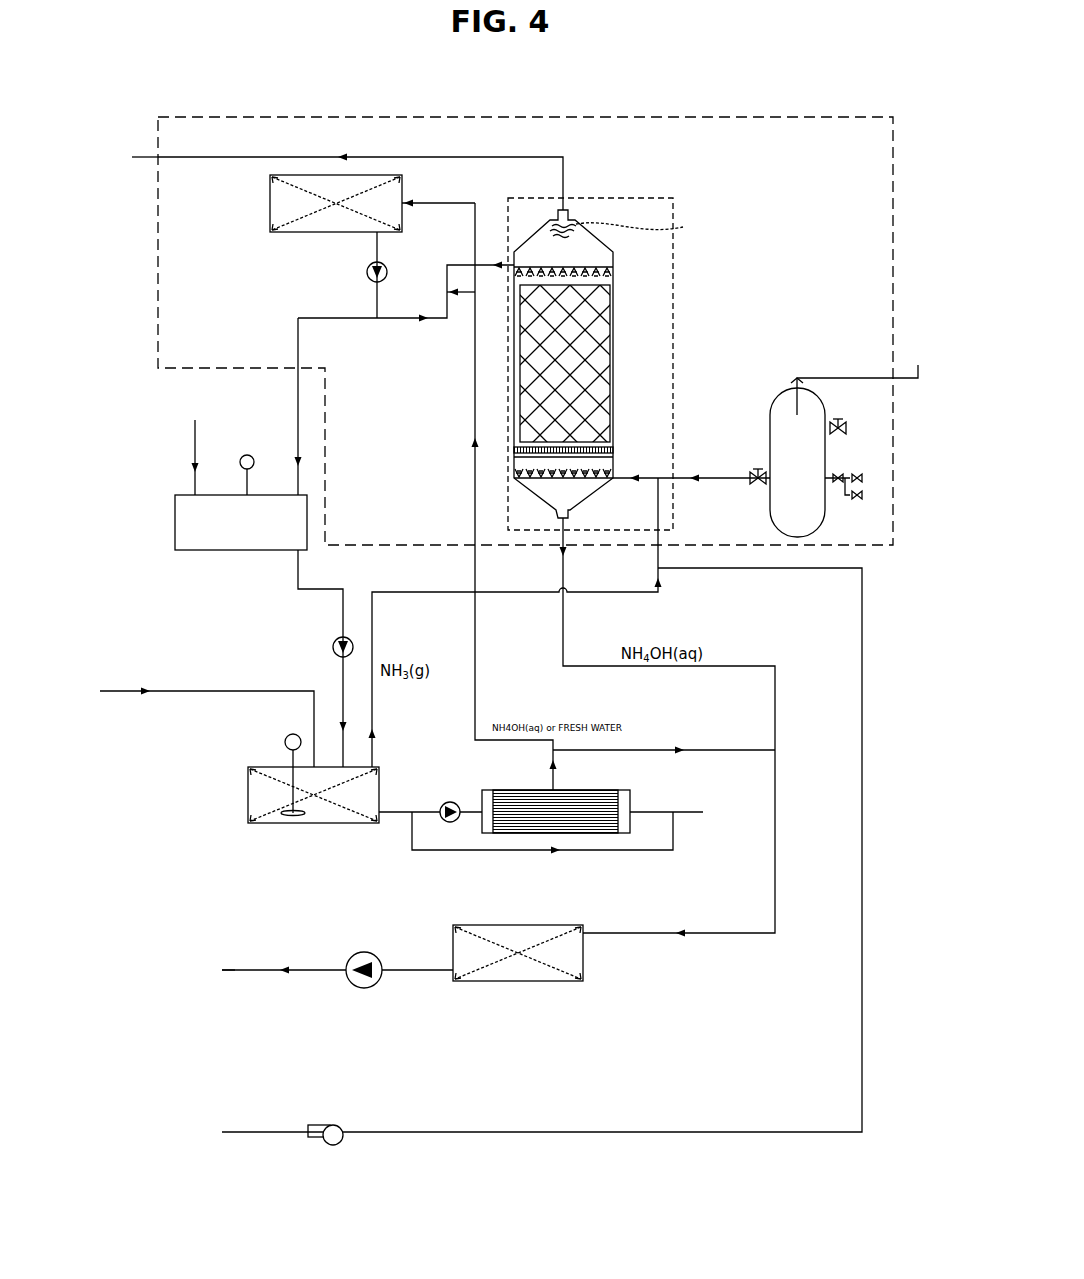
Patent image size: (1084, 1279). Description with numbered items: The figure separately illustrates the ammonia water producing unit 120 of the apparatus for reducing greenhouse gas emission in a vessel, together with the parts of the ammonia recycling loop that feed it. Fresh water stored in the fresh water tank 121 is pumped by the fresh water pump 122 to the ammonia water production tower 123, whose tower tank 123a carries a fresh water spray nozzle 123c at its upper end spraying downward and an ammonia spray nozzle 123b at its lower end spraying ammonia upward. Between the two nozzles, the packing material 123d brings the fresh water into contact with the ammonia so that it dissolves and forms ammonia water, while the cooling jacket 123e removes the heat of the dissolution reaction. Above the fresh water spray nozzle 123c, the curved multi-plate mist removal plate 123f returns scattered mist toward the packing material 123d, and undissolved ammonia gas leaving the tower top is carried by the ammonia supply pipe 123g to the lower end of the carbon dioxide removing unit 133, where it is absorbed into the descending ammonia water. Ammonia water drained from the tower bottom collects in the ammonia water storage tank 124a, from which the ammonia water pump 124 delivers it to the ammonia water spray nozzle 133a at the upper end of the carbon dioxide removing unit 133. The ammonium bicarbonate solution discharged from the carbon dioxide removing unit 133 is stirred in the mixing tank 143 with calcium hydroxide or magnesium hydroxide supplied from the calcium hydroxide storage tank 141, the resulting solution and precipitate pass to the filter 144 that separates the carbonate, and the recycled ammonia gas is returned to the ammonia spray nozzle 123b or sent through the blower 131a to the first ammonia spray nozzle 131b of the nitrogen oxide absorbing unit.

The ammonia water producing unit 120 is at (538, 111).
The fresh water tank 121 is at (372, 203).
The fresh water pump 122 is at (426, 496).
The ammonia water production tower 123 is at (713, 355).
The tower tank 123a is at (587, 364).
The NH3 spray nozzle 123b is at (716, 451).
The fresh water spray nozzle 123c is at (563, 260).
The packing material 123d is at (565, 363).
The cooling jacket 123e is at (585, 451).
The mist removal plate 123f is at (636, 227).
The NH3 supply pipe 123g is at (360, 171).
The ammonia water pump 124 is at (337, 960).
The ammonia water storage tank 124a is at (518, 941).
The blower 131a is at (325, 1122).
The first NH3 spray nozzle 131b is at (548, 855).
The CO2 removing unit 133 is at (189, 457).
The ammonia water spray nozzle 133a is at (209, 970).
The Ca(OH)2 storage tank 141 is at (261, 586).
The mixing tank 143 is at (427, 760).
The filter 144 is at (592, 811).